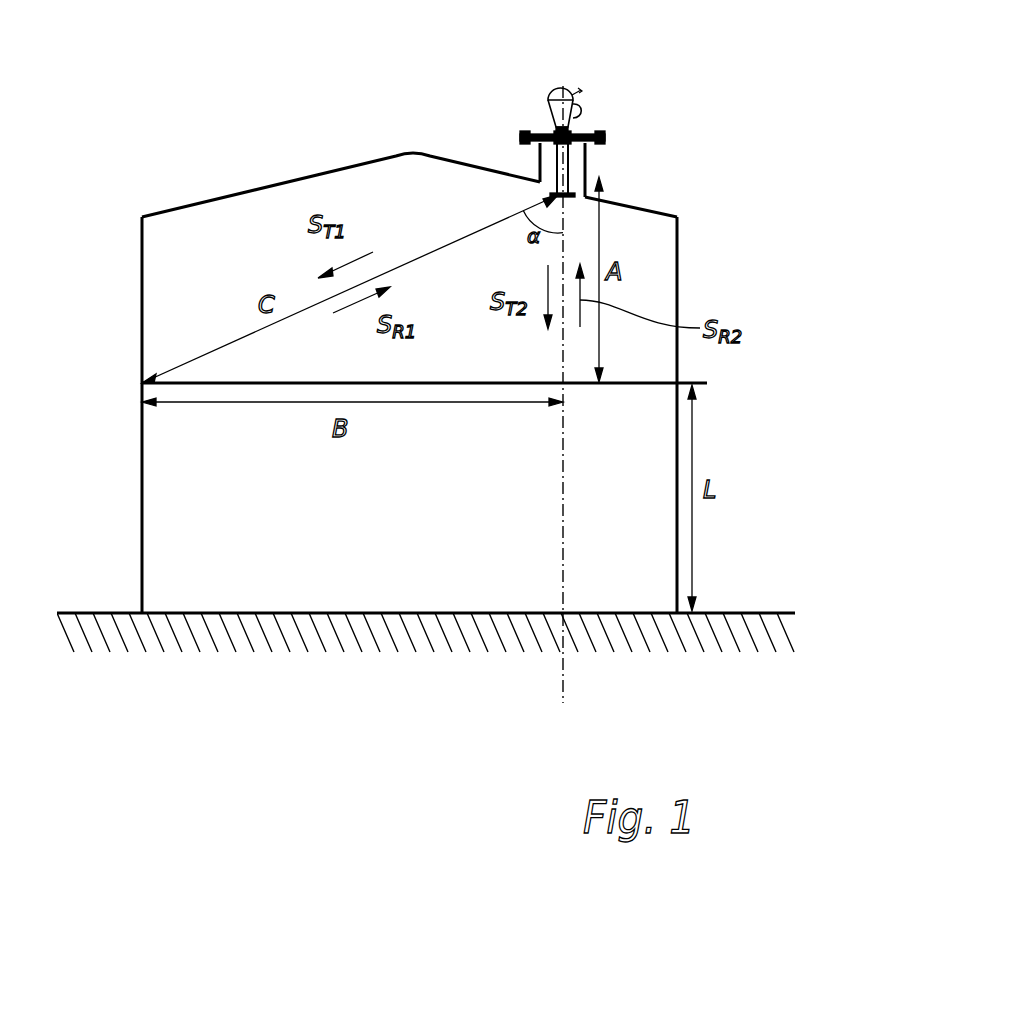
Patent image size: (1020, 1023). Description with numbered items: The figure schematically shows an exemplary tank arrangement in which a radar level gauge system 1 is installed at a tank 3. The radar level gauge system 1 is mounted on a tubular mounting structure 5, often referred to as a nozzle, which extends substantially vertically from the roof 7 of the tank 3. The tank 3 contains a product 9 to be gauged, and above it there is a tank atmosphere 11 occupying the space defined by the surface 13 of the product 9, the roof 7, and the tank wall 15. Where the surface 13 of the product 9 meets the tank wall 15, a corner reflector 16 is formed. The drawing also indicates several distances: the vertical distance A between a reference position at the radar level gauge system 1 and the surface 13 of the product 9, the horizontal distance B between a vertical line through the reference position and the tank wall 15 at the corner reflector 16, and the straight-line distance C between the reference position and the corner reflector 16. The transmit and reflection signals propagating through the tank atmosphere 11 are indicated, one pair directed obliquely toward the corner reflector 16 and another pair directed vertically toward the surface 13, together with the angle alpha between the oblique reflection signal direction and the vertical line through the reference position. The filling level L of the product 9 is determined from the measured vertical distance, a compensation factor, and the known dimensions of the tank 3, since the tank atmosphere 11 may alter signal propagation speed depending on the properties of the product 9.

The radar level gauge system 1 is at (599, 108).
The tank 3 is at (416, 343).
The tubular mounting structure 5 is at (599, 163).
The roof 7 is at (322, 172).
The product 9 is at (404, 517).
The tank atmosphere 11 is at (464, 296).
The surface 13 is at (417, 383).
The tank wall 15 is at (142, 328).
The corner reflector 16 is at (148, 380).